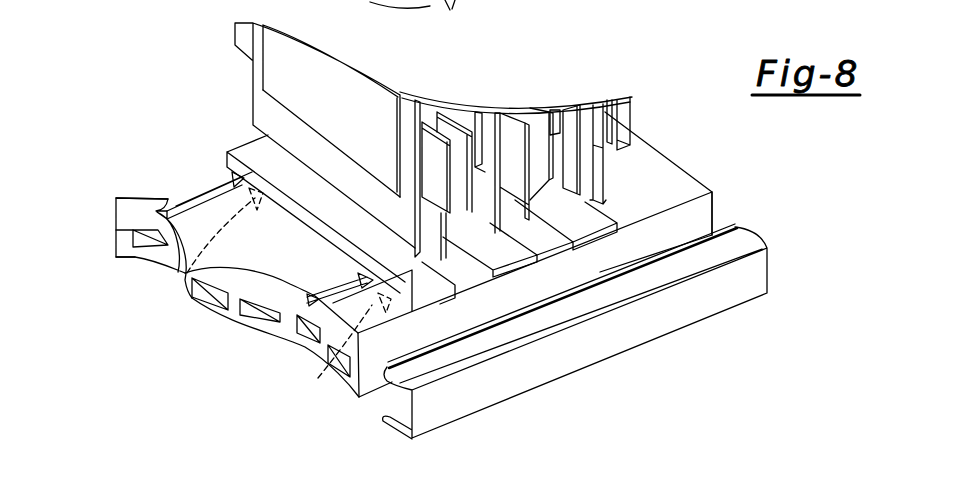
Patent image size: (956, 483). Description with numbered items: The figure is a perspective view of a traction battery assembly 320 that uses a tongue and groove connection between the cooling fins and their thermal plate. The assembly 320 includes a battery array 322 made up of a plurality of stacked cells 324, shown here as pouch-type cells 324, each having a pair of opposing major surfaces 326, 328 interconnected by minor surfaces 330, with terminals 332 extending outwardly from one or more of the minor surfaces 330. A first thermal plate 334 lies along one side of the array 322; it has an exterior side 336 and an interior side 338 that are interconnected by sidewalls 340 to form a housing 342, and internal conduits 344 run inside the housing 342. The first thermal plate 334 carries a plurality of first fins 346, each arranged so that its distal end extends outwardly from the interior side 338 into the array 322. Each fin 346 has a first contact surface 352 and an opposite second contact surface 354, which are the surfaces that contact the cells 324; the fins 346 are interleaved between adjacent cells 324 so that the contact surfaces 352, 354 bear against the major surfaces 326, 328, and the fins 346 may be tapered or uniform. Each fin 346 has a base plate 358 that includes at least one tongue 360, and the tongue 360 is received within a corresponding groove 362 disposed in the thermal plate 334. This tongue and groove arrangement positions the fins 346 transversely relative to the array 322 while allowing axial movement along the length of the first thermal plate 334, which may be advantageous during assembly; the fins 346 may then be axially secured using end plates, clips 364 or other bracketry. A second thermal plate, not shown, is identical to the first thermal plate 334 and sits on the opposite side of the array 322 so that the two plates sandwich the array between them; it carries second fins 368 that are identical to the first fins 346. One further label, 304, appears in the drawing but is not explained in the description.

The component 304 is at (397, 5).
The traction battery assembly 320 is at (218, 42).
The battery array 322 is at (230, 90).
The stacked cells 324 is at (409, 229).
The major surface 326 is at (263, 110).
The major surface 328 is at (605, 157).
The minor surfaces 330 is at (422, 252).
The terminals 332 is at (630, 117).
The first thermal plate 334 is at (123, 233).
The exterior side 336 is at (122, 258).
The interior side 338 is at (176, 195).
The sidewalls 340 is at (116, 230).
The housing 342 is at (133, 198).
The internal conduits 344 is at (193, 298).
The first fins 346 is at (596, 170).
The first contact surface 352 is at (425, 227).
The second contact surface 354 is at (709, 191).
The base plate 358 is at (290, 175).
The tongue 360 is at (187, 274).
The groove 362 is at (303, 315).
The clips 364 is at (609, 352).
The second fins 368 is at (341, 113).